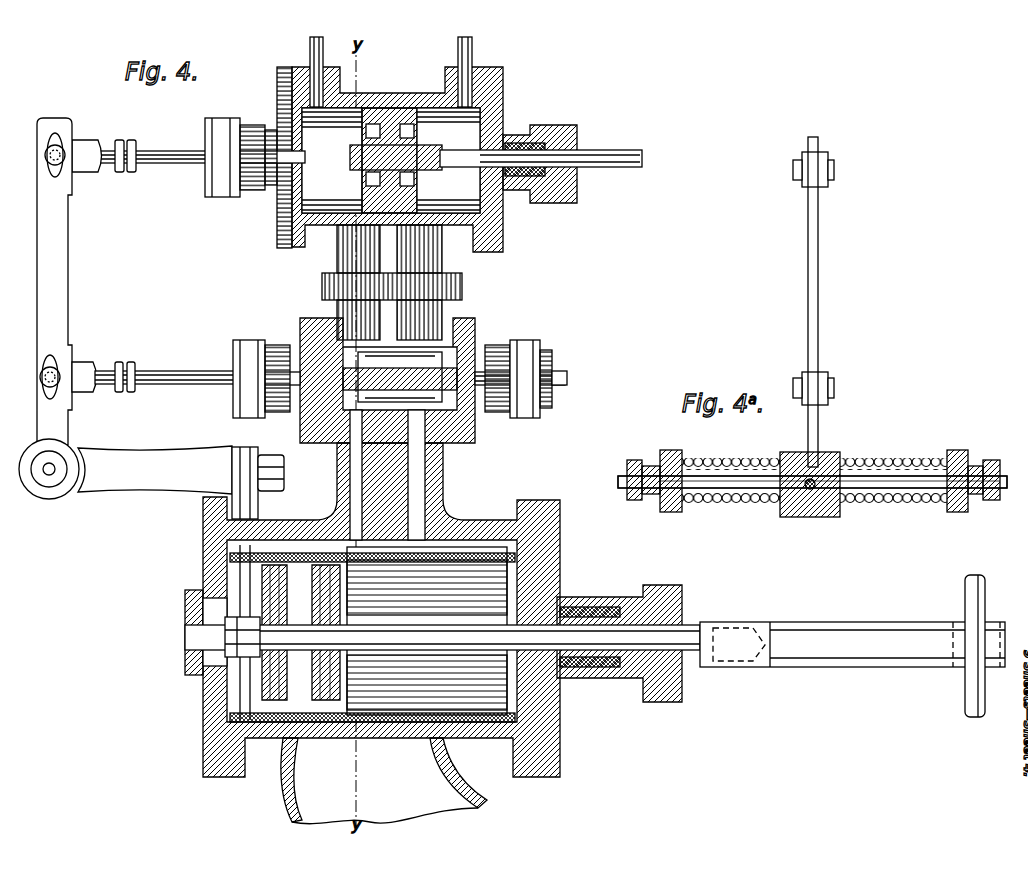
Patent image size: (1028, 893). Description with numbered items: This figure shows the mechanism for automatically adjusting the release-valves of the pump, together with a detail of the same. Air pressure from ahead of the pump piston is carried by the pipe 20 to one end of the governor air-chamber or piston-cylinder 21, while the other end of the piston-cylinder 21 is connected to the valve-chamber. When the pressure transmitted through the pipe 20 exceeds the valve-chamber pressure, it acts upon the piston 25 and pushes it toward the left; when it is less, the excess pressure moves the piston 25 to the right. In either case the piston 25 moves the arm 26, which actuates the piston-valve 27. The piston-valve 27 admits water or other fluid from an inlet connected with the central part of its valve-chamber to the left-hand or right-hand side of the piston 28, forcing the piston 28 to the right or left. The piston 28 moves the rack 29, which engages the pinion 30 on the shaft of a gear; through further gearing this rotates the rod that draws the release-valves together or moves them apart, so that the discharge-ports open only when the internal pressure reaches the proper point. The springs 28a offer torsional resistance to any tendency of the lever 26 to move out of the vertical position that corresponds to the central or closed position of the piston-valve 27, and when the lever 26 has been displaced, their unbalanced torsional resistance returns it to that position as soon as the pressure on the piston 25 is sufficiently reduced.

In FIG. 4, the pipe 20 is at (490, 58).
In FIG. 4, the piston-cylinder 21 is at (448, 160).
In FIG. 4, the piston 25 is at (355, 178).
In FIG. 4, the arm 26 is at (62, 313).
In FIG. 4A, the arm 26 is at (820, 312).
In FIG. 4, the piston-valve 27 is at (462, 418).
In FIG. 4, the piston 28 is at (338, 683).
In FIG. 4A, the springs 28a is at (910, 446).
In FIG. 4, the rack 29 is at (802, 637).
In FIG. 4, the pinion 30 is at (953, 668).